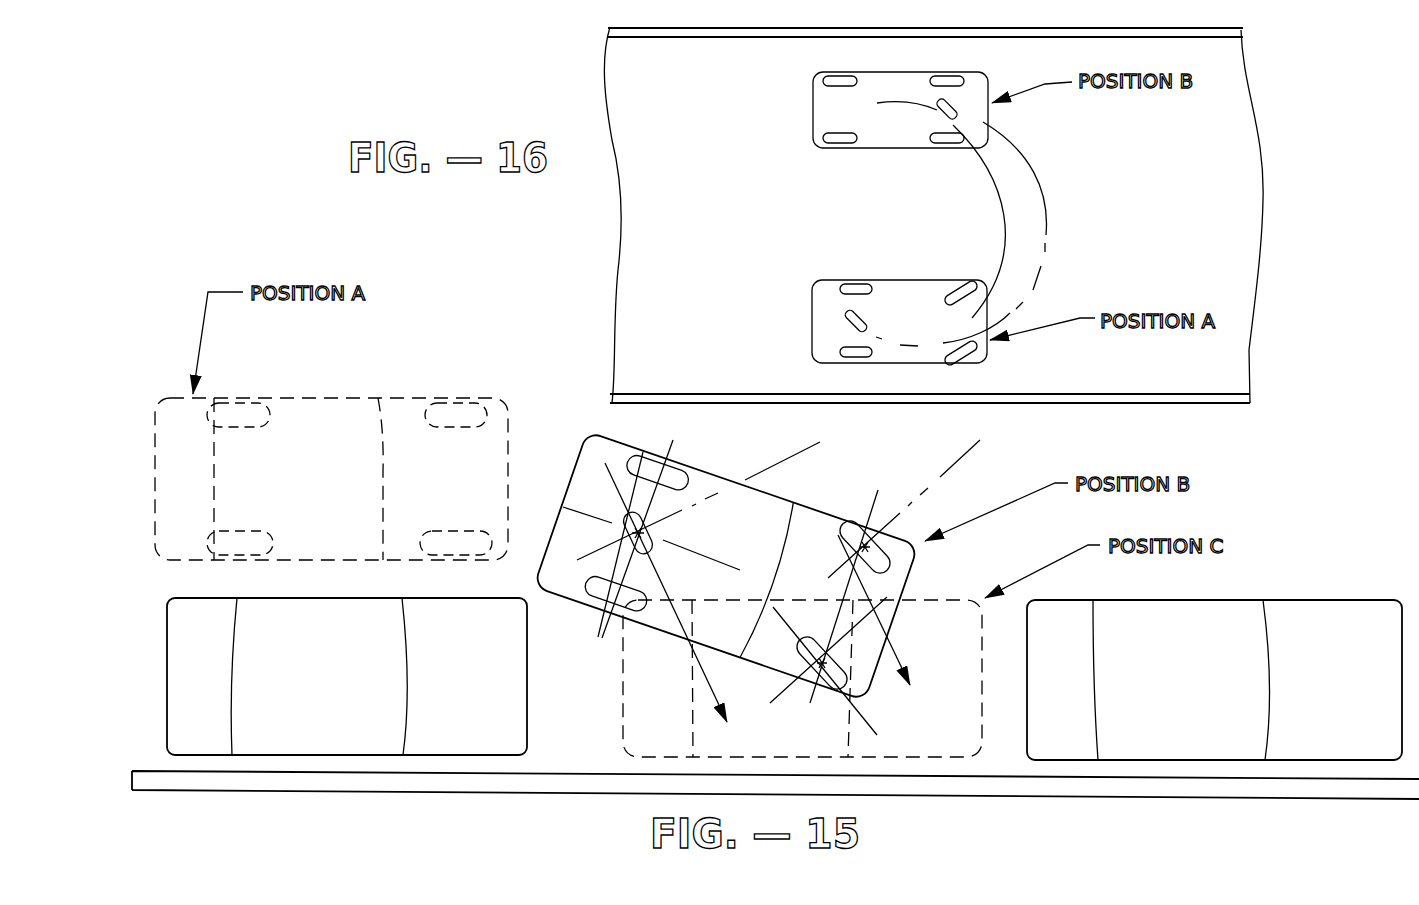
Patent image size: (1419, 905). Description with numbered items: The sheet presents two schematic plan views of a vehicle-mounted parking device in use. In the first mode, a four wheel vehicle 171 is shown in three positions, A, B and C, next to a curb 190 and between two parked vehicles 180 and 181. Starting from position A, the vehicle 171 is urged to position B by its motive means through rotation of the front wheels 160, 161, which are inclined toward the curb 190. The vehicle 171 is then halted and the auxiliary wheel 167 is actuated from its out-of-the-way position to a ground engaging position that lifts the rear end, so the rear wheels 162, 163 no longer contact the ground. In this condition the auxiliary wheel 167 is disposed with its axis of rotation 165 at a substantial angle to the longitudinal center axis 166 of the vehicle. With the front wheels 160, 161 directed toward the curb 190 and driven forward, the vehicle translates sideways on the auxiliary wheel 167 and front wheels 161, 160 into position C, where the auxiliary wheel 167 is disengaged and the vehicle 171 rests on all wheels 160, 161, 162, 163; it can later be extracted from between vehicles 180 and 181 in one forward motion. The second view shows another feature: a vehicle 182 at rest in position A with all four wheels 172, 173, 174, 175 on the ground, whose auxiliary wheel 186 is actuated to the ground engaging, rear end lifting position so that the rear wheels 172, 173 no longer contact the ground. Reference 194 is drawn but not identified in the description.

In FIG. 15, the front wheel 160 is at (905, 540).
In FIG. 15, the front wheel 161 is at (810, 672).
In FIG. 15, the rear wheel 162 is at (675, 472).
In FIG. 15, the rear wheel 163 is at (612, 598).
In FIG. 15, the axis of rotation 165 is at (782, 460).
In FIG. 15, the longitudinal center axis 166 is at (582, 512).
In FIG. 15, the auxiliary wheel 167 is at (622, 528).
In FIG. 15, the four wheel vehicle 171 is at (783, 500).
In FIG. 16, the rear wheel 172 is at (948, 78).
In FIG. 16, the rear wheel 173 is at (945, 145).
In FIG. 16, the wheel 174 is at (839, 145).
In FIG. 16, the wheel 175 is at (835, 83).
In FIG. 15, the vehicle 180 is at (460, 735).
In FIG. 15, the vehicle 181 is at (1205, 737).
In FIG. 16, the vehicle 182 is at (914, 297).
In FIG. 16, the auxiliary wheel 186 is at (940, 112).
In FIG. 15, the curb 190 is at (943, 790).
In FIG. 15, the wheel axis line 194 is at (958, 458).